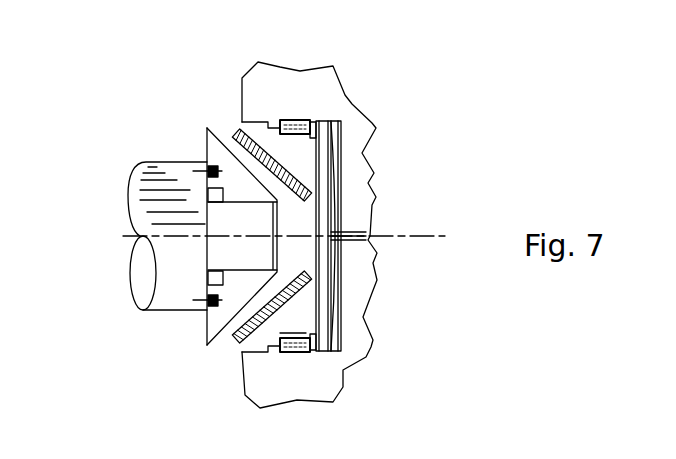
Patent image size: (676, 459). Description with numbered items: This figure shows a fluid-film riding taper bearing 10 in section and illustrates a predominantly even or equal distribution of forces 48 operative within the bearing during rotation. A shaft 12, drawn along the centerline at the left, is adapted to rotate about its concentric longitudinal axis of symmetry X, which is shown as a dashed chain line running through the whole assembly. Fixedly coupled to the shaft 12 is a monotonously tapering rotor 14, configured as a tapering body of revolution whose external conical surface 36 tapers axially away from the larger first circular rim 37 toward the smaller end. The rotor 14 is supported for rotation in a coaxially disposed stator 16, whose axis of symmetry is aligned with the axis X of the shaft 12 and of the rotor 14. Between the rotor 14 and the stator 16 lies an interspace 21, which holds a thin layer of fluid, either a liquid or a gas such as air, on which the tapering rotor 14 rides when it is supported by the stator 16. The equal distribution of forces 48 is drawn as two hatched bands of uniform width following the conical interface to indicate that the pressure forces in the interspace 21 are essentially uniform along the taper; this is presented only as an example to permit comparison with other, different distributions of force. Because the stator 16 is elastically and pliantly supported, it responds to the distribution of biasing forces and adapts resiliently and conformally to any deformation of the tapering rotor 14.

The fluid-film riding taper bearing 10 is at (123, 68).
The shaft 12 is at (118, 188).
The rotor 14 is at (213, 319).
The stator 16 is at (323, 236).
The interspace 21 is at (232, 128).
The external conical surface 36 is at (240, 164).
The first circular rim 37 is at (206, 126).
The equal distribution of forces 48 is at (240, 329).
The axis of symmetry X is at (132, 238).